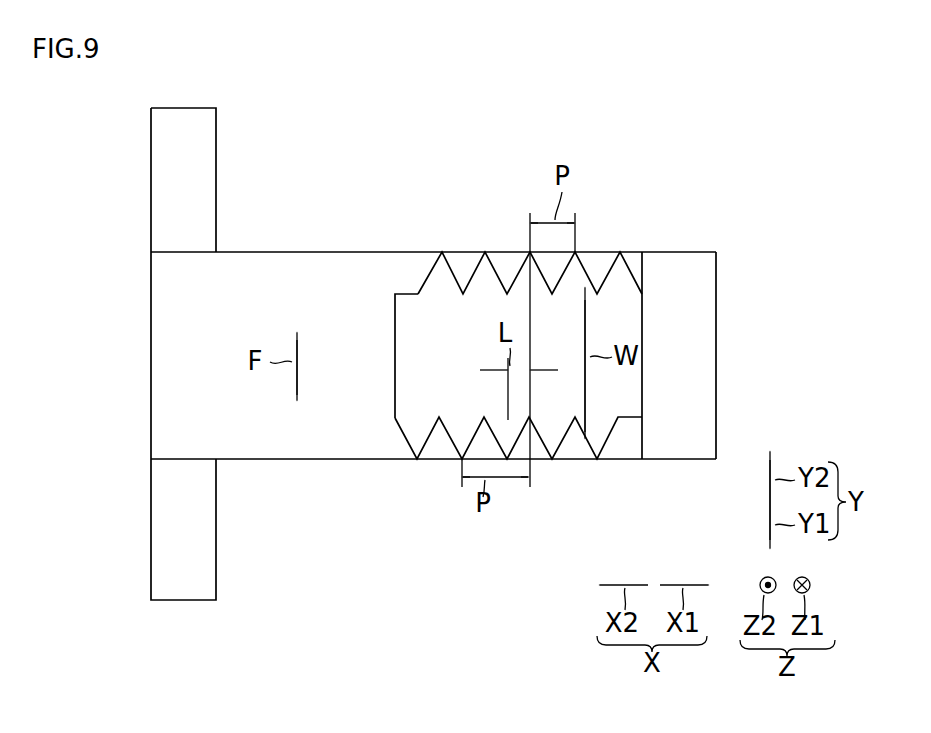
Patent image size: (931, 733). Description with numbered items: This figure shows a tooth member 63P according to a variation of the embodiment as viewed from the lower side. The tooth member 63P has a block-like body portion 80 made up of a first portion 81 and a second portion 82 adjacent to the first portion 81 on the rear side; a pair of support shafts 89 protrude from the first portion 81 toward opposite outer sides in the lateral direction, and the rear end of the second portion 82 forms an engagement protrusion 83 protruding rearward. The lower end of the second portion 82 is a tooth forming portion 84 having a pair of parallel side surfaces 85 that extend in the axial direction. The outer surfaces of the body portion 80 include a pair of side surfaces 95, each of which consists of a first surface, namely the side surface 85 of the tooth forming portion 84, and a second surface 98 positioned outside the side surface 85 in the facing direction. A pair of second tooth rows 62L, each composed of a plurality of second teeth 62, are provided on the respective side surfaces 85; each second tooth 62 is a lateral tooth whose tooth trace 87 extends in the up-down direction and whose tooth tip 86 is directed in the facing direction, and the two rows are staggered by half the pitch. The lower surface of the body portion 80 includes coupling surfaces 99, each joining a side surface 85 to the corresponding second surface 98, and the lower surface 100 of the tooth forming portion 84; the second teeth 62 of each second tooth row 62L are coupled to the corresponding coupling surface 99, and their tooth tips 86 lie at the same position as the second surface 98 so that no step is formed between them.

The body portion 80 is at (272, 249).
The first portion 81 is at (160, 354).
The second portion 82 is at (393, 458).
The engagement protrusion 83 is at (698, 252).
The tooth forming portion 84 is at (395, 344).
The side surface 85 is at (400, 292).
The tooth tip 86 is at (620, 250).
The tooth trace 87 is at (489, 250).
The support shaft 89 is at (218, 135).
The side surface 95 is at (420, 250).
The second surface 98 is at (510, 250).
The coupling surface 99 is at (640, 267).
The lower surface of the tooth forming portion 100 is at (404, 381).
The second tooth 62 is at (494, 272).
The second tooth row 62L is at (414, 274).
The tooth member 63P is at (344, 235).